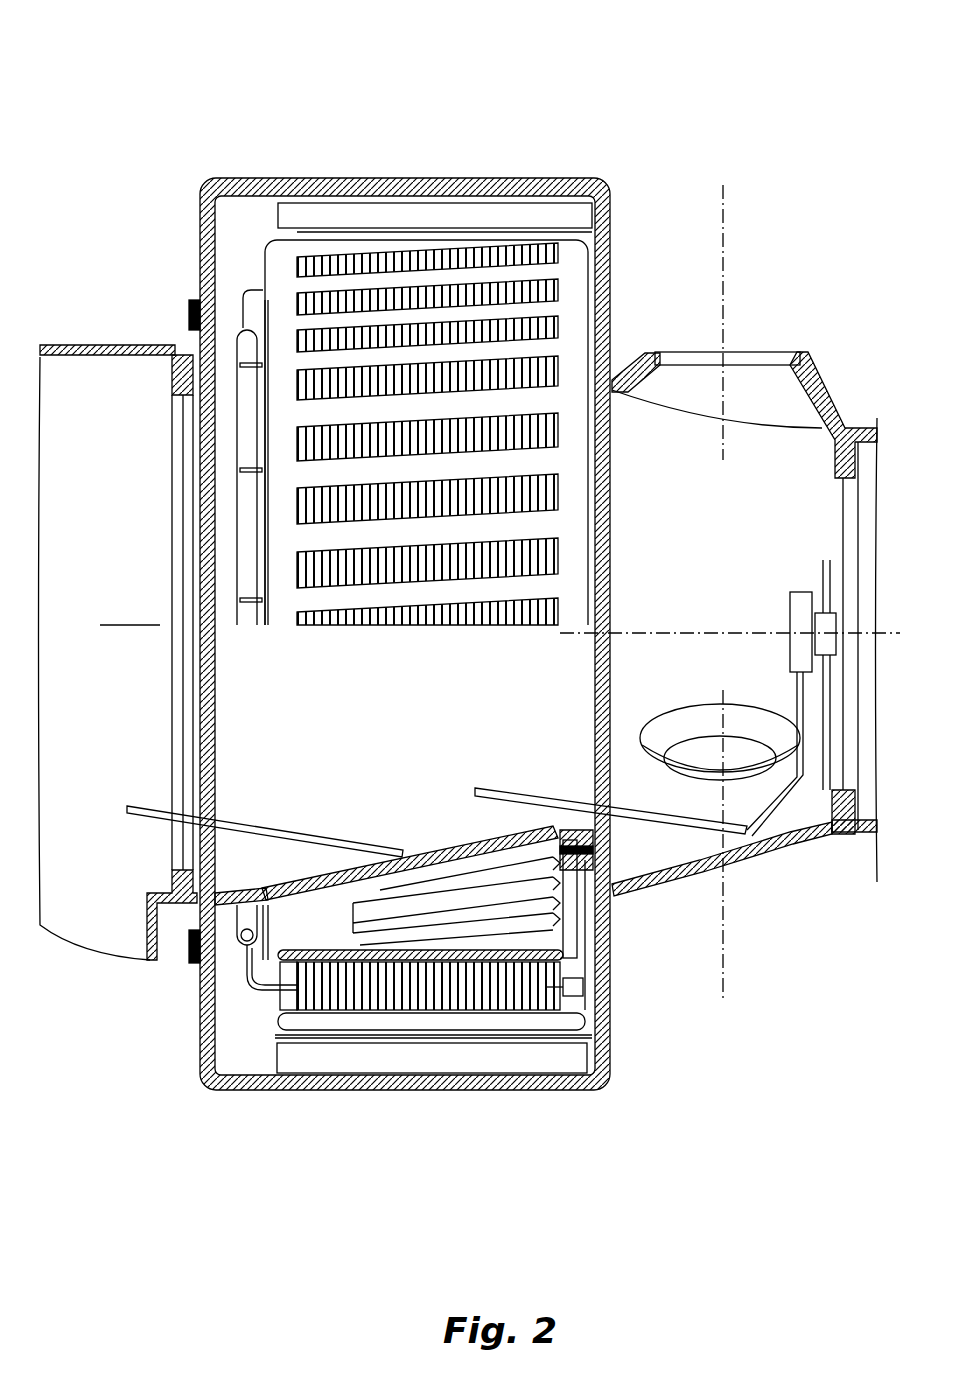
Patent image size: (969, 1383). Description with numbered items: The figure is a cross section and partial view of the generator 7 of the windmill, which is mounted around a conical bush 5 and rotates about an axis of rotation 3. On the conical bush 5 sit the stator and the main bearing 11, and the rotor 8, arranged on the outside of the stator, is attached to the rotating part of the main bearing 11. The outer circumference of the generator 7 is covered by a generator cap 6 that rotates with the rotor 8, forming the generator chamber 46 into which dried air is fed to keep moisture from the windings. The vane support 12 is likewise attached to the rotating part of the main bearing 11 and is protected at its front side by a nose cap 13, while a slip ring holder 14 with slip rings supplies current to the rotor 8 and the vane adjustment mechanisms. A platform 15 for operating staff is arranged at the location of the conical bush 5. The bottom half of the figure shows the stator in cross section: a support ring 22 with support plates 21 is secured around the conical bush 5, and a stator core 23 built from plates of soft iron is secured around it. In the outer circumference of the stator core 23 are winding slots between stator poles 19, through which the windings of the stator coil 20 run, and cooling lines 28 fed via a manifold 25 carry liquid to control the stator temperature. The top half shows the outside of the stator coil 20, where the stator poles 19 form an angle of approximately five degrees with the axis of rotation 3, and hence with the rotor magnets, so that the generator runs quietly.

The generator 7 is at (373, 122).
The generator cap 6 is at (478, 178).
The rotor 8 is at (530, 222).
The stator core 23 is at (488, 1080).
The stator coil 20 is at (612, 330).
The stator poles 19 is at (558, 253).
The generator chamber 46 is at (240, 215).
The axis of rotation 3 is at (115, 622).
The vane support 12 is at (790, 352).
The nose cap 13 is at (862, 428).
The slip ring holder 14 is at (790, 600).
The platform 15 is at (300, 830).
The conical bush 5 is at (437, 838).
The main bearing 11 is at (612, 845).
The support plates 21 is at (590, 912).
The support ring 22 is at (595, 962).
The manifold 25 is at (235, 982).
The cooling lines 28 is at (213, 1040).